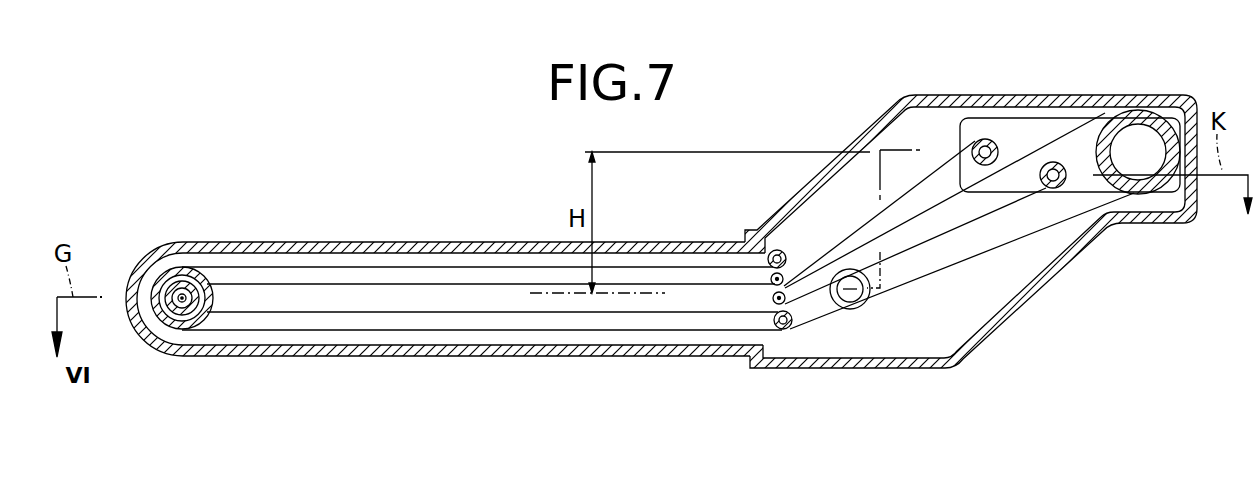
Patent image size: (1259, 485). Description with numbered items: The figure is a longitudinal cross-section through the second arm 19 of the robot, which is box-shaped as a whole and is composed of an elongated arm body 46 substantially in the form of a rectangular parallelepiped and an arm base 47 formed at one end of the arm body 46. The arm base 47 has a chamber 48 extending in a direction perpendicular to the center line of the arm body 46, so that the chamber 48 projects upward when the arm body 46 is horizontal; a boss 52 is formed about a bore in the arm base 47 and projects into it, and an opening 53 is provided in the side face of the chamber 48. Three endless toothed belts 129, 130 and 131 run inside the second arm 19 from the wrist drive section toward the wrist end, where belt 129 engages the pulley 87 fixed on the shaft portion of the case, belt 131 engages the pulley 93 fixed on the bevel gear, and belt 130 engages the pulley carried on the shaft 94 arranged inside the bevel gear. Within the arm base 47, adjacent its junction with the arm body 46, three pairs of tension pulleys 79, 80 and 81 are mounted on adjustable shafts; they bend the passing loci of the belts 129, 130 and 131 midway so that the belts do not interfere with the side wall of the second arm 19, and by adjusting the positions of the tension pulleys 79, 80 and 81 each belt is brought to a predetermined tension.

The second arm 19 is at (661, 198).
The arm body 46 is at (490, 241).
The arm base 47 is at (786, 203).
The chamber 48 is at (1070, 108).
The boss 52 is at (864, 306).
The opening 53 is at (987, 123).
The tension pulleys 79 is at (786, 256).
The tension pulleys 80 is at (714, 308).
The tension pulleys 81 is at (770, 278).
The pulley 87 is at (170, 357).
The pulley 93 is at (177, 248).
The shaft 94 is at (182, 296).
The endless toothed belt 129 is at (297, 266).
The endless toothed belt 130 is at (978, 219).
The endless toothed belt 131 is at (905, 197).